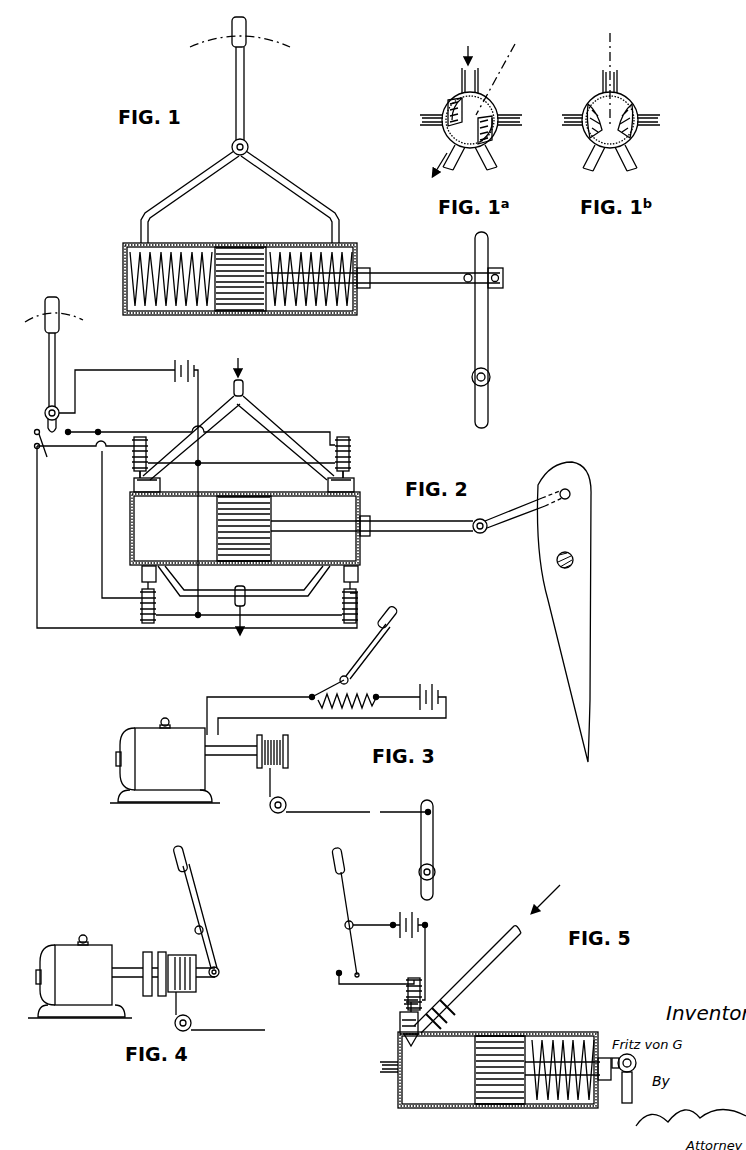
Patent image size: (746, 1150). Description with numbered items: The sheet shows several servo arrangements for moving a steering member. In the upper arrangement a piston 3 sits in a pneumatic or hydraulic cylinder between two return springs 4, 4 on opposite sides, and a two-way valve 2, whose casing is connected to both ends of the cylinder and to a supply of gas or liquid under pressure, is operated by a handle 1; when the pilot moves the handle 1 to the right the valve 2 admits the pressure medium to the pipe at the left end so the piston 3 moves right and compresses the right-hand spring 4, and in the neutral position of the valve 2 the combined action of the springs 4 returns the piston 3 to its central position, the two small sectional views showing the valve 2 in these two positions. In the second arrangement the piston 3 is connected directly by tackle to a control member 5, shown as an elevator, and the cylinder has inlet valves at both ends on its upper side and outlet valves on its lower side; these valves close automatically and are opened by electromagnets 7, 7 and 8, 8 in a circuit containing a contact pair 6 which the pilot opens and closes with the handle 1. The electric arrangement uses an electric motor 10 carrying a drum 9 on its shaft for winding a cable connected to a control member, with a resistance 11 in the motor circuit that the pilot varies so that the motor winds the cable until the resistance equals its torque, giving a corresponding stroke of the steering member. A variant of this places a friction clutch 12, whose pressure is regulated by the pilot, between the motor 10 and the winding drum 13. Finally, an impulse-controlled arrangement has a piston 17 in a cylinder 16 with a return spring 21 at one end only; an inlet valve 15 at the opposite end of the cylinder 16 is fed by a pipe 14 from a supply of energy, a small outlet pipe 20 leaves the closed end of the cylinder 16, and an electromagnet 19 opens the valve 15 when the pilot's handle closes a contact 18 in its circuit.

In FIG. 1, the handle 1 is at (244, 105).
In FIG. 2, the handle 1 is at (55, 358).
In FIG. 1, the two-way valve 2 is at (249, 146).
In FIG. 1A, the two-way valve 2 is at (471, 110).
In FIG. 1B, the two-way valve 2 is at (640, 134).
In FIG. 1, the piston 3 is at (248, 300).
In FIG. 2, the piston 3 is at (256, 518).
In FIG. 1, the return springs 4 is at (178, 262).
In FIG. 2, the control member 5 is at (540, 527).
In FIG. 2, the contact pair 6 is at (66, 437).
In FIG. 2, the electromagnets 7 is at (132, 455).
In FIG. 2, the electromagnets 8 is at (141, 604).
In FIG. 3, the drum 9 is at (288, 748).
In FIG. 3, the electric motor 10 is at (142, 742).
In FIG. 4, the electric motor 10 is at (63, 958).
In FIG. 3, the resistance 11 is at (326, 670).
In FIG. 4, the friction clutch 12 is at (148, 952).
In FIG. 4, the winding drum 13 is at (180, 955).
In FIG. 5, the pipe 14 is at (500, 946).
In FIG. 5, the inlet valve 15 is at (402, 1040).
In FIG. 5, the cylinder 16 is at (470, 1027).
In FIG. 5, the piston 17 is at (516, 1100).
In FIG. 5, the contact 18 is at (338, 970).
In FIG. 5, the electromagnet 19 is at (406, 998).
In FIG. 5, the outlet pipe 20 is at (386, 1072).
In FIG. 5, the return spring 21 is at (560, 1046).